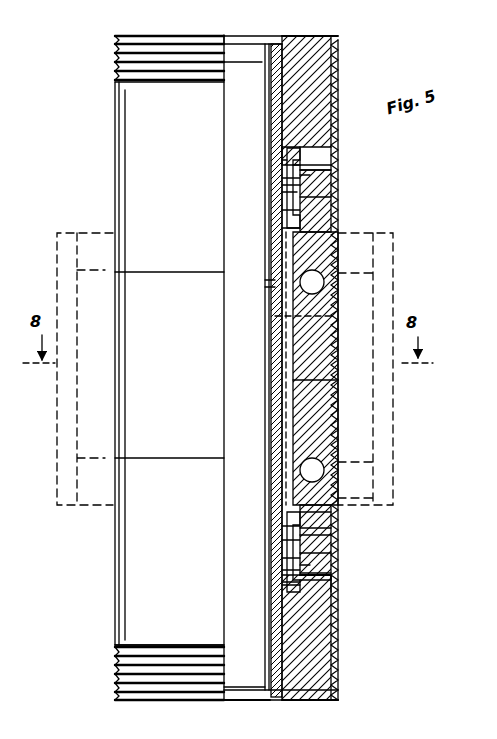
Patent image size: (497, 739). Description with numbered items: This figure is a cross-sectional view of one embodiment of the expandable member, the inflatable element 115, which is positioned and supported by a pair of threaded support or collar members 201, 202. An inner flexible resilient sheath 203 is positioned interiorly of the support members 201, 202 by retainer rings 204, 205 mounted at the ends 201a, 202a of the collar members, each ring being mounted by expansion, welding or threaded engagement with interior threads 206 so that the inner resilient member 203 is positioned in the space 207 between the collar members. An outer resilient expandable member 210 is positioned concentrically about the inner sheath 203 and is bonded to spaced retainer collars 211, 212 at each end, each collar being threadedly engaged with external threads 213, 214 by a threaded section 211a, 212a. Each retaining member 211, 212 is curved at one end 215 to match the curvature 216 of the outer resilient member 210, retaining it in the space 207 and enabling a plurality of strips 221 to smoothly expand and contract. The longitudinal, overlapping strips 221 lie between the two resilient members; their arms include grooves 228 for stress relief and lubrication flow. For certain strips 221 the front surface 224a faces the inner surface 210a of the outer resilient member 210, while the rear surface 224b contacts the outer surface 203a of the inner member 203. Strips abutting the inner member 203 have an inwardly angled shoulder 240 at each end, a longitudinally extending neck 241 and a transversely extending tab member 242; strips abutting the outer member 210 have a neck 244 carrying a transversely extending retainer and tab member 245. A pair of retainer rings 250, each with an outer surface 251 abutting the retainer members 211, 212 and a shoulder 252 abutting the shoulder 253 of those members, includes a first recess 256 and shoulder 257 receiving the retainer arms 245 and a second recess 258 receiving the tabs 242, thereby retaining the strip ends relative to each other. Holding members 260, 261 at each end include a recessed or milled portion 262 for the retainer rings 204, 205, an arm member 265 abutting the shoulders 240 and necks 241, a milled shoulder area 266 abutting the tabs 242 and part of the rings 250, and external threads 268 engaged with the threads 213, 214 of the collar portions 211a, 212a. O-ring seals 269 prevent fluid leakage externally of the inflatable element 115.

The inflatable element 115 is at (408, 226).
The support or collar member 201 is at (169, 367).
The end of collar member 201a is at (224, 38).
The support or collar member 202 is at (169, 579).
The end of collar member 202a is at (248, 705).
The inner flexible resilient sheath 203 is at (297, 192).
The outer surface of inner resilient member 203a is at (270, 287).
The retainer ring 204 is at (240, 58).
The retainer ring 205 is at (243, 680).
The interior threads 206 is at (236, 44).
The space 207 is at (169, 319).
The outer resilient expandable member 210 is at (335, 316).
The inner surface of outer resilient member 210a is at (337, 383).
The retainer collar 211 is at (335, 215).
The threaded section of retainer member 211a is at (337, 165).
The retainer collar 212 is at (338, 492).
The threaded section of retainer member 212a is at (338, 603).
The external threads 213 is at (337, 98).
The external threads 214 is at (338, 627).
The curved end of retaining member 215 is at (337, 297).
The curvature of outer resilient member 216 is at (338, 468).
The longitudinal expandable strip 221 is at (300, 163).
The front surface of strip body 224a is at (265, 280).
The rear surface of strip body 224b is at (300, 226).
The groove or recess 228 is at (275, 316).
The inwardly angled shoulder 240 is at (300, 210).
The longitudinally extending neck 241 is at (300, 180).
The transversely extending tab member 242 is at (280, 148).
The longitudinally extending neck 244 is at (336, 197).
The transversely extending retainer and tab member 245 is at (333, 180).
The retainer strip ring 250 is at (337, 158).
The outer surface of retainer ring 251 is at (335, 172).
The shoulder of retainer ring 252 is at (338, 528).
The shoulder of retainer member 253 is at (338, 535).
The first recess 256 is at (338, 553).
The shoulder of first recess 257 is at (300, 570).
The second recess 258 is at (338, 573).
The holding member 260 is at (312, 62).
The holding member 261 is at (328, 660).
The recessed or milled portion 262 is at (330, 38).
The arm member 265 is at (300, 540).
The milled shoulder area 266 is at (300, 582).
The external threads 268 is at (315, 675).
The O-ring seal 269 is at (336, 150).